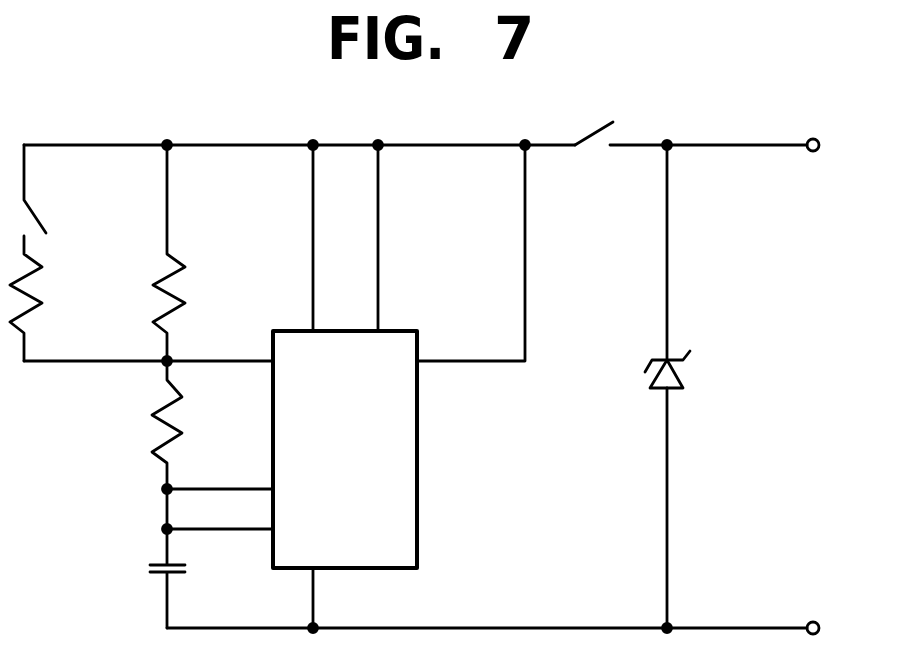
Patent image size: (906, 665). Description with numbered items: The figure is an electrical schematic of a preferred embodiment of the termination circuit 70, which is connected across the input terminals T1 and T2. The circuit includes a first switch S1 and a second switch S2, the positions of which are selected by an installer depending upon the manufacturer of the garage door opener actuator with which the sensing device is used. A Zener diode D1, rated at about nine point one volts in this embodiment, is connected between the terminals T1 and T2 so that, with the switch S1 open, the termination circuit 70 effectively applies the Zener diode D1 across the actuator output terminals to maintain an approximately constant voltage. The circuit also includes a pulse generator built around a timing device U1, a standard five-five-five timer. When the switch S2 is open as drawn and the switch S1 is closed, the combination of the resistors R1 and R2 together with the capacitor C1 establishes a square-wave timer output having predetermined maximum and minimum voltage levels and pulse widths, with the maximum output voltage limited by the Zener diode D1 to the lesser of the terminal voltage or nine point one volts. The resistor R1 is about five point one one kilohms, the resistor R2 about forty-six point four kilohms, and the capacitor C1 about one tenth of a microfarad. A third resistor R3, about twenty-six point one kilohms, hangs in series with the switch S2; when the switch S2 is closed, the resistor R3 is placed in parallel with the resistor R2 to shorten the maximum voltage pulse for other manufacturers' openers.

The termination circuit 70 is at (256, 137).
The first switch S1 is at (590, 116).
The second switch S2 is at (51, 189).
The resistor R1 is at (192, 425).
The resistor R2 is at (191, 253).
The third resistor R3 is at (49, 298).
The capacitor C1 is at (191, 557).
The timing device U1 is at (346, 386).
The Zener diode D1 is at (689, 386).
The input terminal T1 is at (801, 125).
The input terminal T2 is at (799, 605).